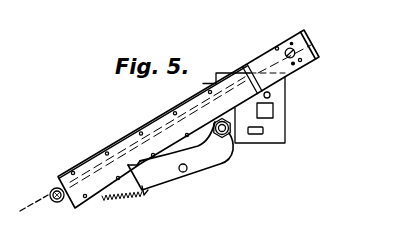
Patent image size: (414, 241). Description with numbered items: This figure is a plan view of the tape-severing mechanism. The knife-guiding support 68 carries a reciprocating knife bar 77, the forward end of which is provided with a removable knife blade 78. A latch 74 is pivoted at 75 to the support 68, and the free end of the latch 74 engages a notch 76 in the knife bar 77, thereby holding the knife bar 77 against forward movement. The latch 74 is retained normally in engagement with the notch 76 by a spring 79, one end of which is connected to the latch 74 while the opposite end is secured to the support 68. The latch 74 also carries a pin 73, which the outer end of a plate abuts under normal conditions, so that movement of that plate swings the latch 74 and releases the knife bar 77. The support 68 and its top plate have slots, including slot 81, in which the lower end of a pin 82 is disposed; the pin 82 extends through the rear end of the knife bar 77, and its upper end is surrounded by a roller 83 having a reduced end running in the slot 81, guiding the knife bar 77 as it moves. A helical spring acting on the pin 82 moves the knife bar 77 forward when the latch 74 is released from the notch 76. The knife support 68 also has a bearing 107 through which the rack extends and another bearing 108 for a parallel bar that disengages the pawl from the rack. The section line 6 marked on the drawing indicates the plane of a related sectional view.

The section line 6- 6 is at (180, 124).
The knife-guiding support 68 is at (116, 140).
The pin 73 is at (183, 172).
The latch 74 is at (208, 167).
The pivot 75 is at (230, 151).
The notch 76 is at (143, 152).
The reciprocating knife bar 77 is at (202, 108).
The removable knife blade 78 is at (310, 43).
The spring 79 is at (127, 202).
The slot 81 is at (83, 161).
The pin 82 is at (48, 208).
The roller 83 is at (51, 193).
The bearing 107 is at (273, 111).
The bearing 108 is at (263, 134).